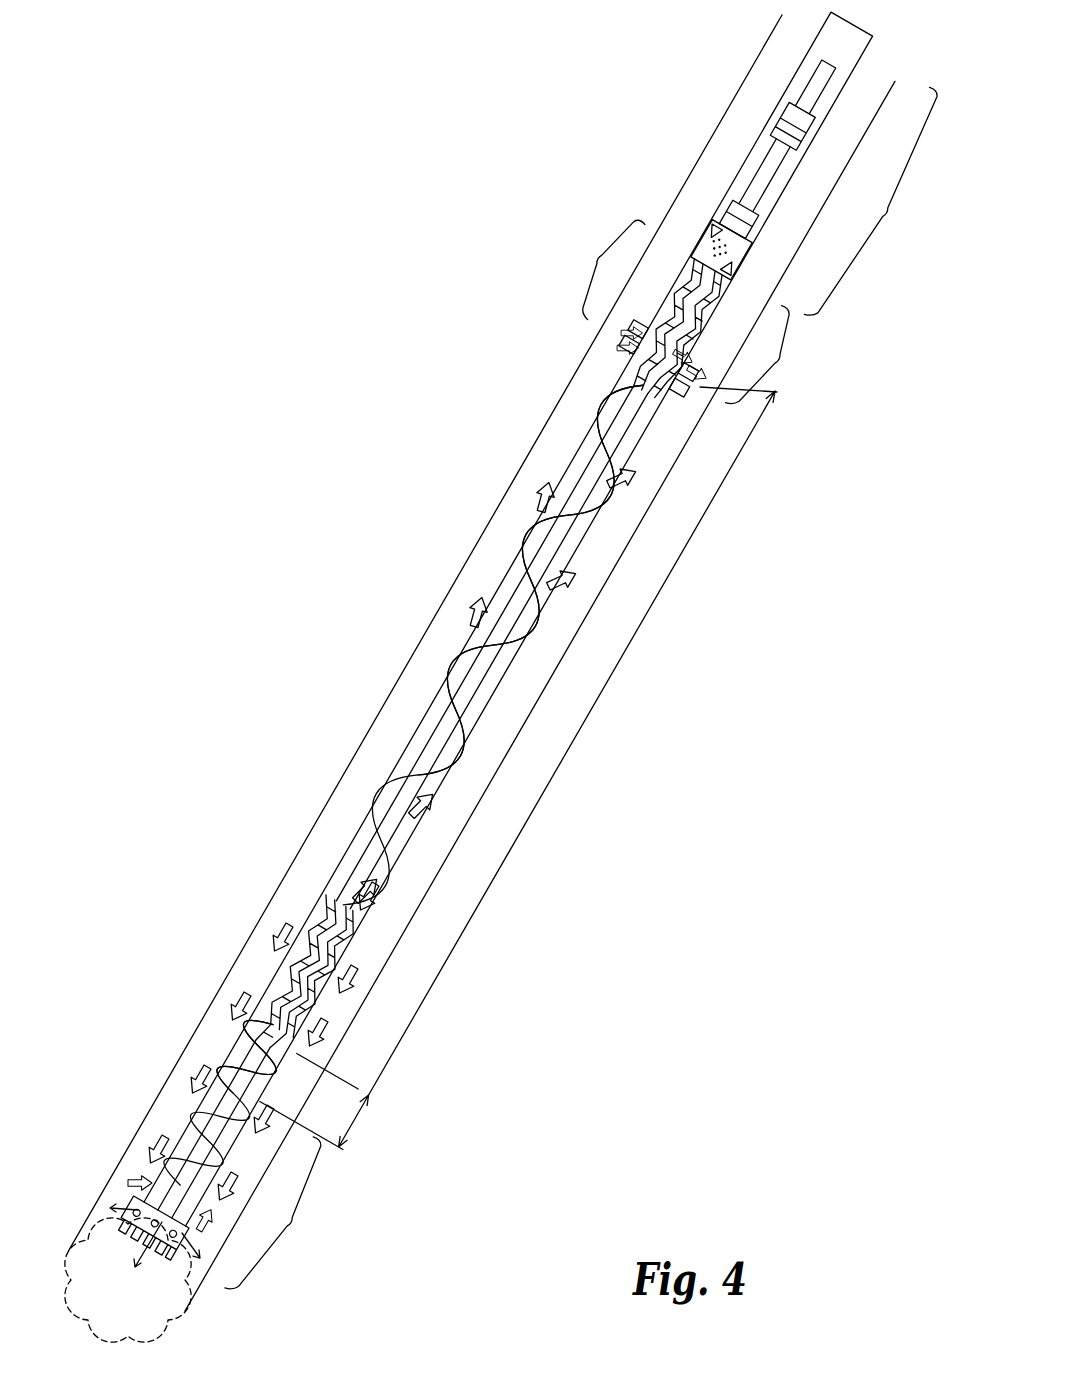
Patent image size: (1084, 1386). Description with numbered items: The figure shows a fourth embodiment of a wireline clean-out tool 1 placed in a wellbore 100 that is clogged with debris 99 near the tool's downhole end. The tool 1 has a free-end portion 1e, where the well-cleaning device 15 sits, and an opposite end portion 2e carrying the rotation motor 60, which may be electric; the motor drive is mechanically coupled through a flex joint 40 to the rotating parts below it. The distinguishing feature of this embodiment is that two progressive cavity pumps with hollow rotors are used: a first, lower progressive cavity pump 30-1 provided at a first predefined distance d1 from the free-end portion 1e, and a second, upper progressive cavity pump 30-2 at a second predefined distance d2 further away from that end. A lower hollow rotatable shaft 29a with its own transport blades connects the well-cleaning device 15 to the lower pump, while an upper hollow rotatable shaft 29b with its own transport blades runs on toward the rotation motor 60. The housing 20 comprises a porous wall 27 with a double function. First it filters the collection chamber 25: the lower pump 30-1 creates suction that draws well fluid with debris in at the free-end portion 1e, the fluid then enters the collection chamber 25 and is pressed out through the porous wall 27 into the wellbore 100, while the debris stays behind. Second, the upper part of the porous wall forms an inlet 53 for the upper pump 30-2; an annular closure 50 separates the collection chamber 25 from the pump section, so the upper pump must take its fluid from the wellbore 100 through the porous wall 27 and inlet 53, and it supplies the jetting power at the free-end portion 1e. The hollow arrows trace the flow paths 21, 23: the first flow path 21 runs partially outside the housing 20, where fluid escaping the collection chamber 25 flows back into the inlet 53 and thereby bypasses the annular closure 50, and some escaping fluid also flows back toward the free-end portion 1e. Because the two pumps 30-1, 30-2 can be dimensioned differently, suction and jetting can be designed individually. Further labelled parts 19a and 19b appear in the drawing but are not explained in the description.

The wellbore 100 is at (775, 25).
The wireline clean-out tool 1 is at (328, 264).
The opposite end portion 2e is at (876, 205).
The free-end portion 1e is at (279, 1218).
The debris 99 is at (140, 1300).
The well-cleaning device 15 is at (140, 1200).
The first pressure wave 19a is at (250, 1077).
The second pressure wave 19b is at (595, 478).
The housing 20 is at (703, 238).
The first flow path 21 is at (733, 250).
The flow path 23 is at (690, 258).
The collection chamber 25 is at (567, 483).
The porous wall 27 is at (727, 300).
The lower hollow rotatable shaft 29a is at (183, 1122).
The upper hollow rotatable shaft 29b is at (530, 540).
The first progressive cavity pump 30-1 is at (287, 972).
The second progressive cavity pump 30-2 is at (680, 292).
The flex joint 40 is at (763, 173).
The annular closure 50 is at (636, 352).
The inlet 53 is at (688, 313).
The rotation motor 60 is at (800, 77).
The first predefined distance d1 is at (316, 1100).
The second predefined distance d2 is at (571, 742).